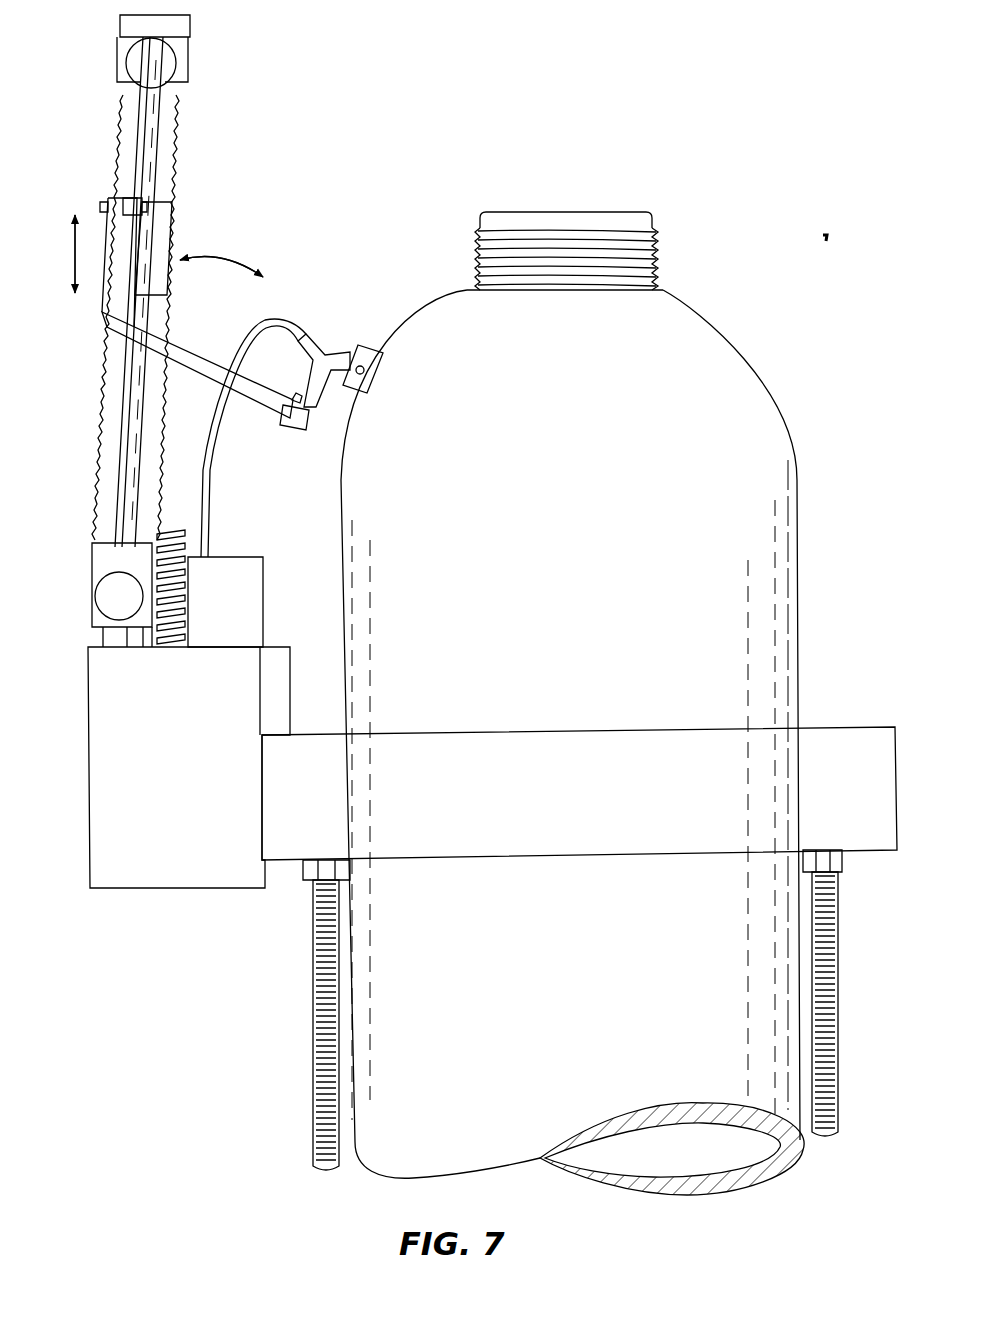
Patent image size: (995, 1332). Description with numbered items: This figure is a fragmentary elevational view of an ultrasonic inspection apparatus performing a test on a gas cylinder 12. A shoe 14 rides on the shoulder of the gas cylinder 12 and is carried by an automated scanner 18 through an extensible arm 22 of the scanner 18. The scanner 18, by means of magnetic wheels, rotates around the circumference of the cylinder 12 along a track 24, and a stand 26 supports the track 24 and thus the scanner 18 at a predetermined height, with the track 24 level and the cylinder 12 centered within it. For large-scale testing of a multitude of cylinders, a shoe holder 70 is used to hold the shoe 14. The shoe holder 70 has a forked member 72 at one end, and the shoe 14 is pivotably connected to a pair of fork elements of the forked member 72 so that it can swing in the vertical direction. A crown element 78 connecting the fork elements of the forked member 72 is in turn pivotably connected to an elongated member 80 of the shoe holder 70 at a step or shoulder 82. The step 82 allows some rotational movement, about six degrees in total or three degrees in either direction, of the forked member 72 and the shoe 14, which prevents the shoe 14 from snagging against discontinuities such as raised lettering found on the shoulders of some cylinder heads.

The gas cylinder 12 is at (716, 304).
The shoe 14 is at (372, 347).
The automated scanner 18 is at (86, 771).
The extensible arm 22 is at (93, 422).
The track 24 is at (848, 728).
The stand 26 is at (831, 961).
The shoe holder 70 is at (188, 380).
The forked member 72 is at (321, 410).
The crown element 78 is at (297, 396).
The elongated member 80 is at (193, 330).
The step or shoulder 82 is at (290, 418).